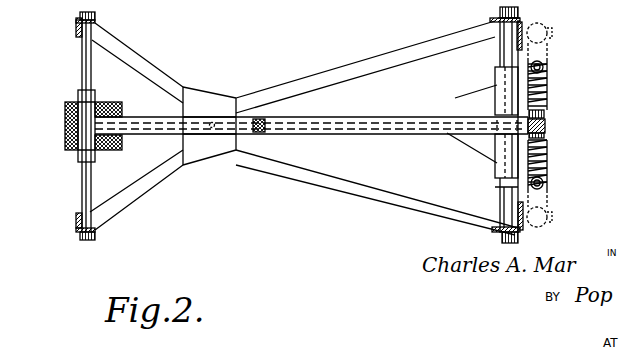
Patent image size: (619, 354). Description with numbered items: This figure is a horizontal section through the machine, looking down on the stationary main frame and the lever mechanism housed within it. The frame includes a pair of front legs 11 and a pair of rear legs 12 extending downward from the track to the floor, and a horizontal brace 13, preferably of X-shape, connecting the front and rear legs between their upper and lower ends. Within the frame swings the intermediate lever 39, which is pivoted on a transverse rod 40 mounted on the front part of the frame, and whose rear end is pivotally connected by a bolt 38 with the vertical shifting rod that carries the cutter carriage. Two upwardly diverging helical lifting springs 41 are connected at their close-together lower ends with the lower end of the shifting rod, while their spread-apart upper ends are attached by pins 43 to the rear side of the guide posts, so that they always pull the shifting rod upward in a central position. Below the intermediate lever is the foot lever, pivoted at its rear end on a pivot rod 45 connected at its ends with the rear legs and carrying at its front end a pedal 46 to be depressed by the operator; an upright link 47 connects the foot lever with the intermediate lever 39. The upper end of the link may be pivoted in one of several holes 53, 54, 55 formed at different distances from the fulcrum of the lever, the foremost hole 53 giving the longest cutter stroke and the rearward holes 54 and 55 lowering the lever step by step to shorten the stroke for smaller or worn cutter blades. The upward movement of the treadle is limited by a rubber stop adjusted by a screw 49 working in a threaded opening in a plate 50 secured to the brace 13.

The front legs 11 is at (77, 226).
The rear legs 12 is at (490, 18).
The horizontal brace 13 is at (336, 173).
The bolt 38 is at (548, 115).
The intermediate lever 39 is at (423, 126).
The transverse rod 40 is at (82, 66).
The lifting springs 41 is at (548, 73).
The pins 43 is at (564, 215).
The pivot rod 45 is at (500, 192).
The pedal 46 is at (68, 149).
The upright link 47 is at (267, 133).
The screw 49 is at (212, 121).
The plate 50 is at (210, 157).
The foremost hole 53 is at (284, 117).
The intermediate hole 54 is at (330, 117).
The rearmost hole 55 is at (375, 117).